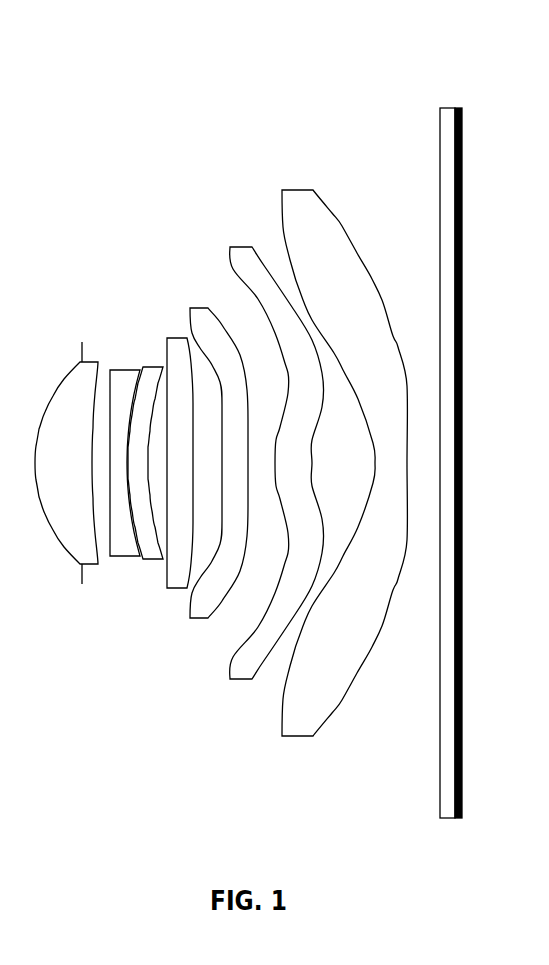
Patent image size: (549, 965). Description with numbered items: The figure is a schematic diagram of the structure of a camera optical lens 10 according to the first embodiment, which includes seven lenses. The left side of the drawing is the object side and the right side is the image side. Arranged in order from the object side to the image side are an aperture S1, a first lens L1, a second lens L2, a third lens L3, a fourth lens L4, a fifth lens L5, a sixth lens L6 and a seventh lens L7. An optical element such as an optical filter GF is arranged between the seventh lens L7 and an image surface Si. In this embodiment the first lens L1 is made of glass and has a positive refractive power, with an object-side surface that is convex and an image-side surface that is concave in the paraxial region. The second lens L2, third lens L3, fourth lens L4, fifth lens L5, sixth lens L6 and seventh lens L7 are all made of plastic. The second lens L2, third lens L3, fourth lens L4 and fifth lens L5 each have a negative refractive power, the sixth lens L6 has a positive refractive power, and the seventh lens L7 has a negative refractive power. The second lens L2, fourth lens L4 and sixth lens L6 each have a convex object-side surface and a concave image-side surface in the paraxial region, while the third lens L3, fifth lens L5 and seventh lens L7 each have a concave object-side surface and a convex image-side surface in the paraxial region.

The camera optical lens 10 is at (268, 42).
The aperture S1 is at (78, 451).
The first lens L1 is at (74, 449).
The second lens L2 is at (126, 451).
The third lens L3 is at (147, 446).
The fourth lens L4 is at (178, 449).
The fifth lens L5 is at (218, 448).
The sixth lens L6 is at (277, 449).
The seventh lens L7 is at (344, 450).
The optical filter GF is at (436, 450).
The image surface Si is at (468, 446).